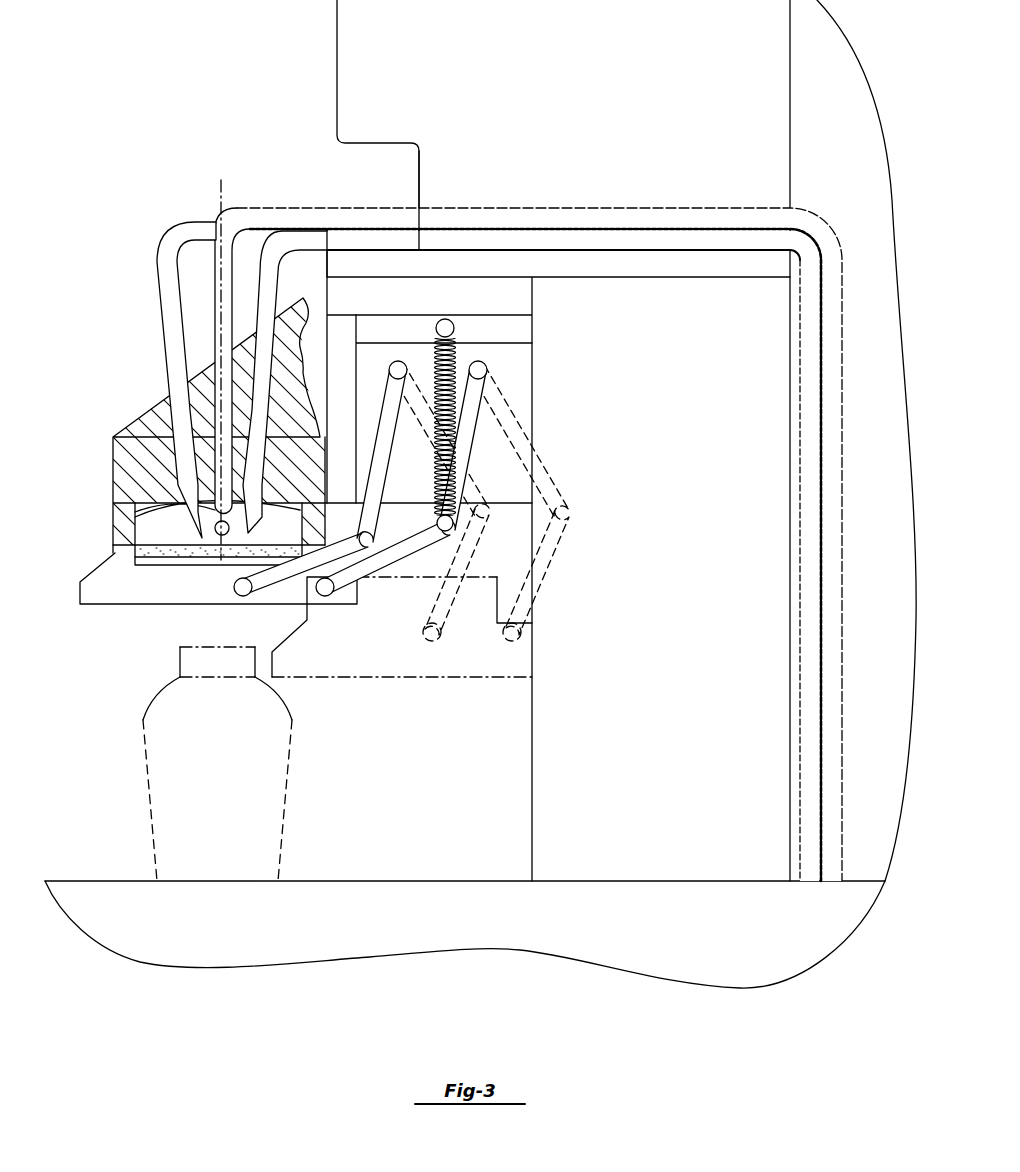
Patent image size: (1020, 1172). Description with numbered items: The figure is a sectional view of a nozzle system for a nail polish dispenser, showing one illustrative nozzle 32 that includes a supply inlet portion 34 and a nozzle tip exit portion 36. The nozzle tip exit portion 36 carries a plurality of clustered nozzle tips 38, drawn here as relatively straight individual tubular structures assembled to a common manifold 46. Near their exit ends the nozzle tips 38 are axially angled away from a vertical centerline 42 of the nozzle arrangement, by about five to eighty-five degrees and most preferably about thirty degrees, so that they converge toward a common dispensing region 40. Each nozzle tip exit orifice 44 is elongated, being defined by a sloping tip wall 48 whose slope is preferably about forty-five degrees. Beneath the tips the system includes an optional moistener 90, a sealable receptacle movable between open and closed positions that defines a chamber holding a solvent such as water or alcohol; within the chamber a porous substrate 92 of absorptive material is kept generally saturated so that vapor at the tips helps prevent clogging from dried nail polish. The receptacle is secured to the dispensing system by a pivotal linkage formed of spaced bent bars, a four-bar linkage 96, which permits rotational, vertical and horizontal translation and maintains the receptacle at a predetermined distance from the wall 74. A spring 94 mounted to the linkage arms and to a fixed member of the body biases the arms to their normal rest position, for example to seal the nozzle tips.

The nozzle 32 is at (85, 210).
The supply inlet portion 34 is at (267, 180).
The nozzle tip exit portion 36 is at (177, 558).
The nozzle tips 38 is at (133, 515).
The common dispensing region 40 is at (318, 790).
The vertical centerline 42 is at (215, 322).
The nozzle tip exit orifice 44 is at (218, 546).
The common manifold 46 is at (118, 445).
The sloping tip wall 48 is at (250, 532).
The wall 74 is at (400, 472).
The moistener 90 is at (87, 597).
The porous substrate 92 is at (115, 548).
The spring 94 is at (455, 335).
The 4-bar linkage 96 is at (473, 397).